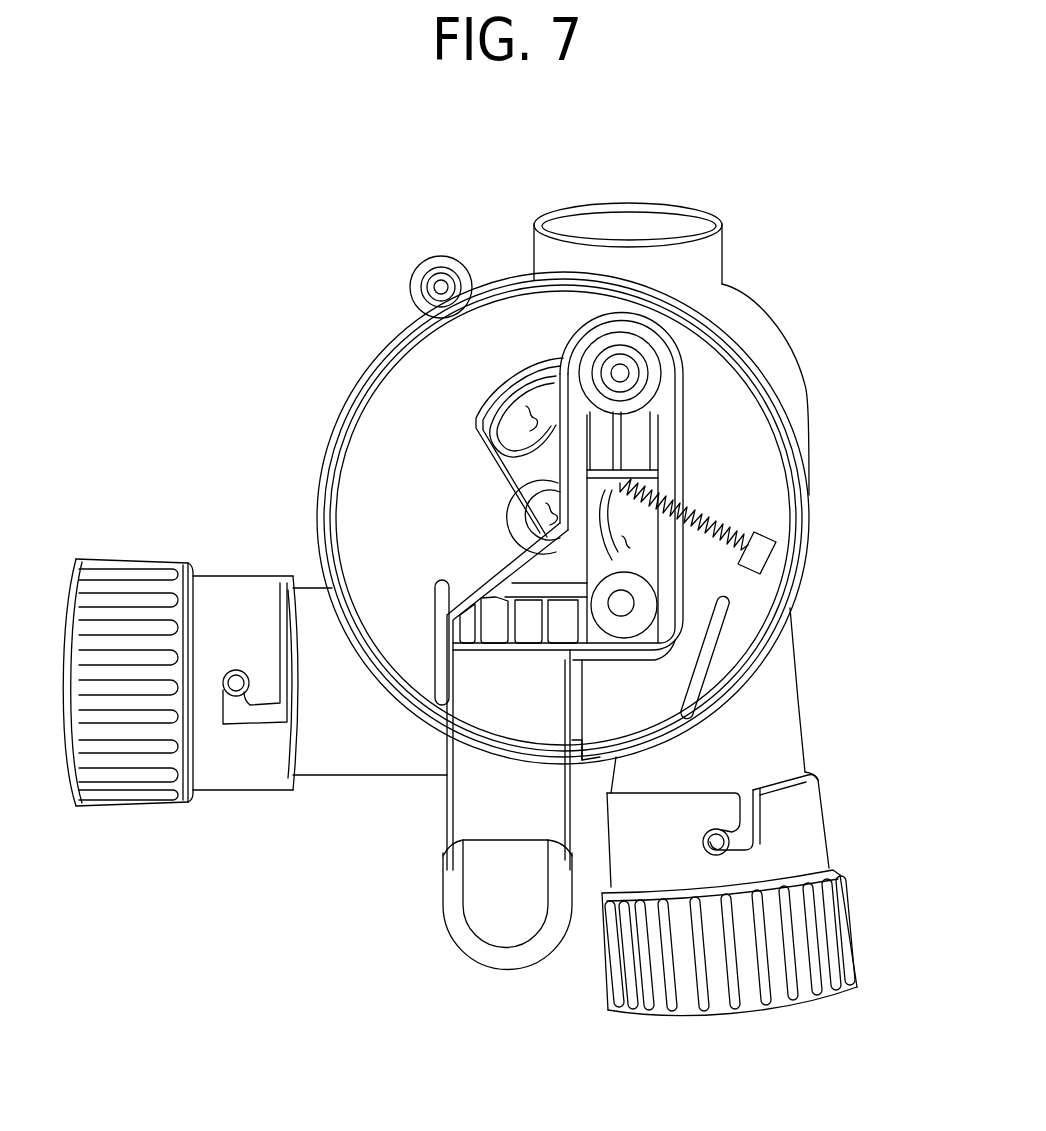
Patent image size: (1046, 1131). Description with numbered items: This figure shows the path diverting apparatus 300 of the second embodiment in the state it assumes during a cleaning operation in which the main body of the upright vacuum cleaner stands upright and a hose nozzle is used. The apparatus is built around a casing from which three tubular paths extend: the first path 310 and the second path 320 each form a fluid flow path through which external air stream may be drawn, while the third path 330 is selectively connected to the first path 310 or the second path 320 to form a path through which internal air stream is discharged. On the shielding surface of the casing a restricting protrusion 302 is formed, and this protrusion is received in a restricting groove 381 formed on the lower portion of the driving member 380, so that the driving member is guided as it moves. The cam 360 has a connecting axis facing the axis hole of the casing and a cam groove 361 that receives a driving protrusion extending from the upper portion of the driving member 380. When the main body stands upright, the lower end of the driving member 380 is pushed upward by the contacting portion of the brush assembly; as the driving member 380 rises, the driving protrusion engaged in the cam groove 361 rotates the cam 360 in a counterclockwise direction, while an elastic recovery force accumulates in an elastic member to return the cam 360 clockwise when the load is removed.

The path diverting apparatus 300 is at (486, 1092).
The restricting protrusion 302 is at (624, 603).
The first path 310 is at (823, 817).
The second path 320 is at (247, 576).
The third path 330 is at (722, 272).
The cam 360 is at (527, 373).
The cam groove 361 is at (527, 415).
The driving member 380 is at (480, 803).
The restricting groove 381 is at (625, 543).